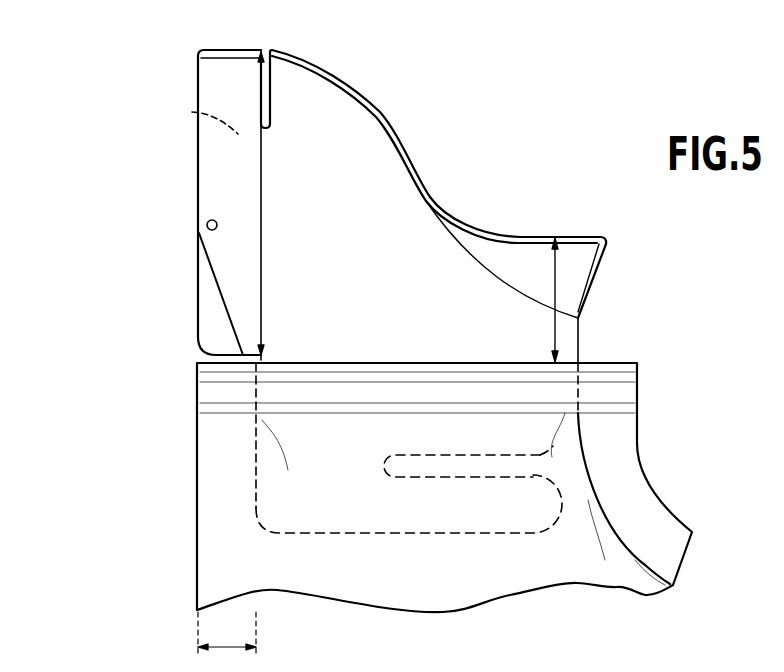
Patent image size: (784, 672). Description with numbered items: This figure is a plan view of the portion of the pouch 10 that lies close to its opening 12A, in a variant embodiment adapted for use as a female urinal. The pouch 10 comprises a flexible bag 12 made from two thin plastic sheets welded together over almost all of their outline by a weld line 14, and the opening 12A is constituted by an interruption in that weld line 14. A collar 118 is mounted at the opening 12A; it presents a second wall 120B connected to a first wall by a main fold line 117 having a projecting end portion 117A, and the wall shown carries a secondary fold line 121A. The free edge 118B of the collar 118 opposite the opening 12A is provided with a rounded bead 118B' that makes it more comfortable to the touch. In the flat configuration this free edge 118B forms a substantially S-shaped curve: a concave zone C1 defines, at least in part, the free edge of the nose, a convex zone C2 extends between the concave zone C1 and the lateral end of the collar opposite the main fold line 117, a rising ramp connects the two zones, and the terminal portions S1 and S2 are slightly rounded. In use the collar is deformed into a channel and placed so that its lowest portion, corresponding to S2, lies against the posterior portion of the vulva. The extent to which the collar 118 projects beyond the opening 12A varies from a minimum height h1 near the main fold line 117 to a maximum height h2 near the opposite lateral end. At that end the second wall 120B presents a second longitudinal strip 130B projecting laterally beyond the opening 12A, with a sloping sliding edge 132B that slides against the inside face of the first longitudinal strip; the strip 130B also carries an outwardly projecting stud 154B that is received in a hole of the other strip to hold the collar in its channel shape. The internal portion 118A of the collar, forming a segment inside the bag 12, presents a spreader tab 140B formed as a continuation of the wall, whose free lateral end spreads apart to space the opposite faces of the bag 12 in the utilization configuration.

The pouch 10 is at (661, 489).
The flexible bag 12 is at (435, 602).
The opening 12A is at (397, 361).
The weld line 14 is at (213, 496).
The main fold line 117 is at (587, 335).
The projecting end portion 117A is at (596, 275).
The collar 118 is at (145, 186).
The internal portion of the collar 118A is at (340, 462).
The free edge of the collar 118B is at (358, 108).
The rounded bead 118B' is at (351, 106).
The second wall 120B is at (387, 175).
The secondary fold line 121A is at (470, 263).
The second longitudinal strip 130B is at (198, 113).
The sliding edge 132B is at (218, 292).
The spreader tab 140B is at (503, 512).
The stud 154B is at (206, 225).
The concave zone C1 is at (470, 217).
The convex zone C2 is at (343, 82).
The terminal portion S1 is at (600, 237).
The terminal portion S2 is at (275, 48).
The minimum height h1 is at (542, 299).
The maximum height h2 is at (274, 205).